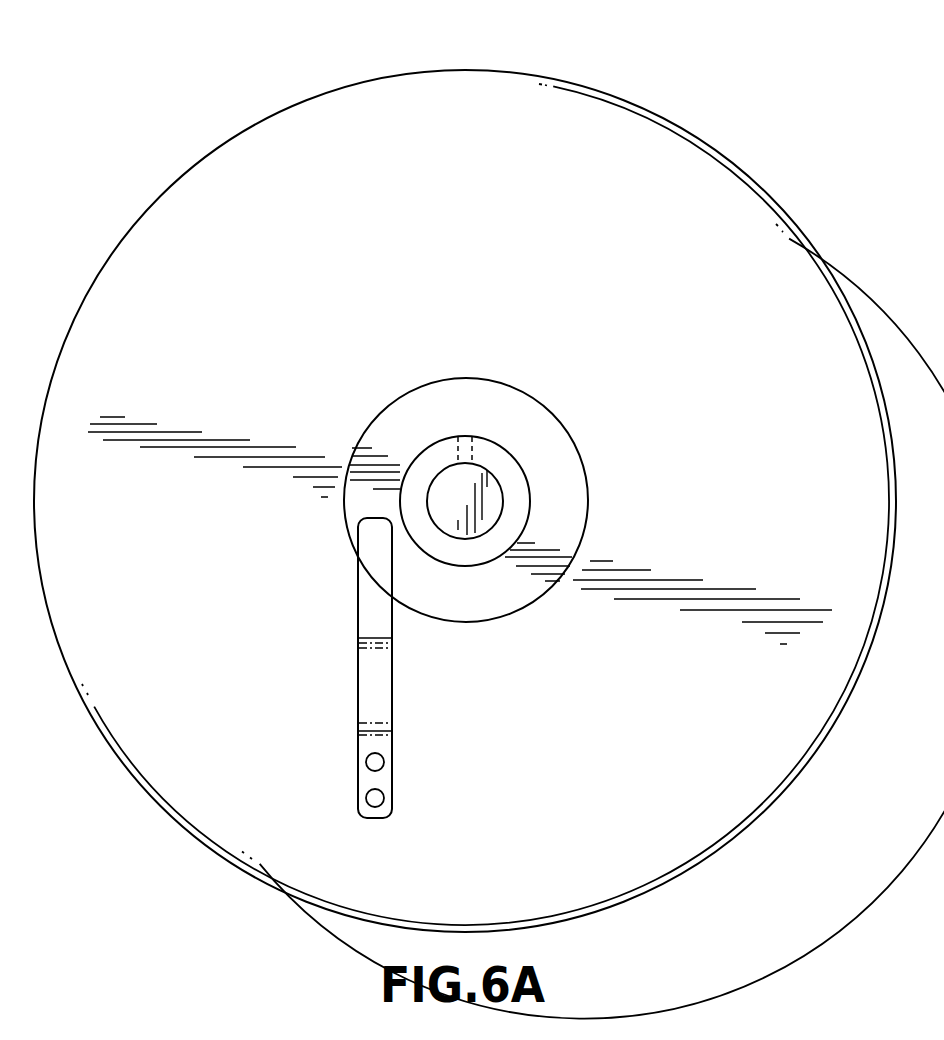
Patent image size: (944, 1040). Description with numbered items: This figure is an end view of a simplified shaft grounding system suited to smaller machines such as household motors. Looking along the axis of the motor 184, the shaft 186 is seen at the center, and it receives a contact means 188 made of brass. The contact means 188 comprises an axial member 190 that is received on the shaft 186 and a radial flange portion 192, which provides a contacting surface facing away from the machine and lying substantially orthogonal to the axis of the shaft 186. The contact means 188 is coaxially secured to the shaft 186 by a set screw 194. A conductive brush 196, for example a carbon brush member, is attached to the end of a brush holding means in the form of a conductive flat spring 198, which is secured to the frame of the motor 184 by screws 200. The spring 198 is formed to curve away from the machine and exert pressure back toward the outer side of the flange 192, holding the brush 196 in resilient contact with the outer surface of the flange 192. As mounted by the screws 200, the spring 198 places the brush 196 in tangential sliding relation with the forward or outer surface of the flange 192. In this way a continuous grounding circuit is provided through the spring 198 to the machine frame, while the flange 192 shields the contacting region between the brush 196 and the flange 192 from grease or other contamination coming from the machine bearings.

The motor 184 is at (503, 70).
The shaft 186 is at (447, 487).
The contact means 188 is at (609, 462).
The axial member 190 is at (530, 528).
The radial flange portion 192 is at (510, 593).
The set screw 194 is at (471, 450).
The conductive brush 196 is at (372, 560).
The conductive flat spring 198 is at (358, 660).
The screws 200 is at (385, 762).